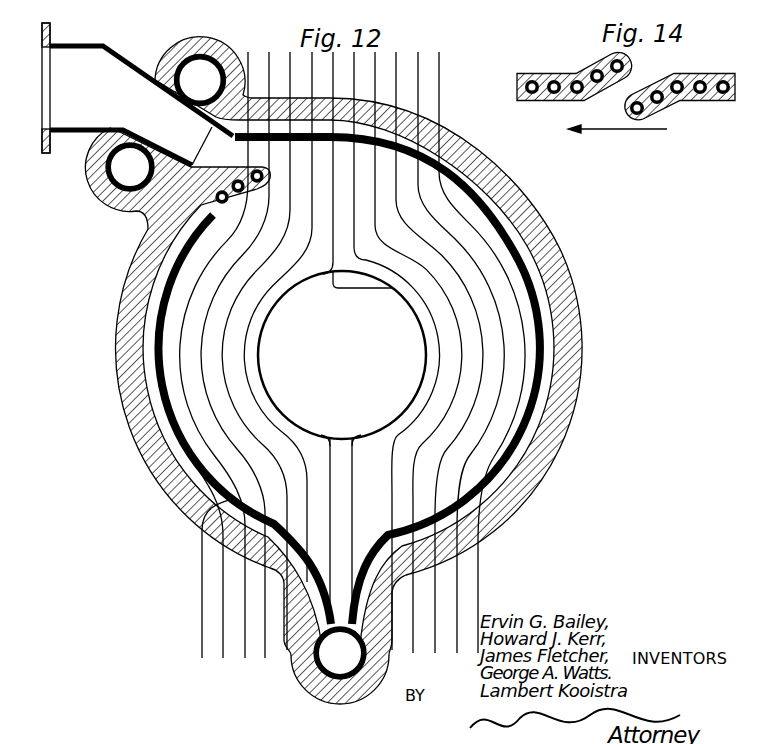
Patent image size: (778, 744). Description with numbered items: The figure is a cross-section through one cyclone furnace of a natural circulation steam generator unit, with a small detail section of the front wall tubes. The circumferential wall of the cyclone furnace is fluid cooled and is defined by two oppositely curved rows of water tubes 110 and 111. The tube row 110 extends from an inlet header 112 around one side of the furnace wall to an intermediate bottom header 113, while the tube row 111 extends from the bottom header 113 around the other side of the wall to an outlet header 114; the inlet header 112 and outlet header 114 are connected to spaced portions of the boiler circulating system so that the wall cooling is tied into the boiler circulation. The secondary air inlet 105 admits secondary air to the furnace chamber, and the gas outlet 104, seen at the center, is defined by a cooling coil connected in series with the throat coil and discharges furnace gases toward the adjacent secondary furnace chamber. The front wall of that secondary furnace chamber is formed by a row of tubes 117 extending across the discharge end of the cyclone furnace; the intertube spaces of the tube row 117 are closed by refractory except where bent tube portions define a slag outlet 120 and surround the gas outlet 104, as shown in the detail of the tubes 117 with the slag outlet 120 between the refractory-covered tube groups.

In FIG. 12, the gas outlet 104 is at (358, 364).
In FIG. 12, the secondary air inlet 105 is at (240, 158).
In FIG. 12, the row of water tubes 110 is at (128, 420).
In FIG. 12, the row of water tubes 111 is at (552, 330).
In FIG. 12, the inlet header 112 is at (118, 172).
In FIG. 12, the intermediate bottom header 113 is at (327, 663).
In FIG. 12, the outlet header 114 is at (197, 68).
In FIG. 14, the row of tubes 117 is at (722, 101).
In FIG. 12, the slag outlet 120 is at (338, 548).
In FIG. 14, the slag outlet 120 is at (625, 87).